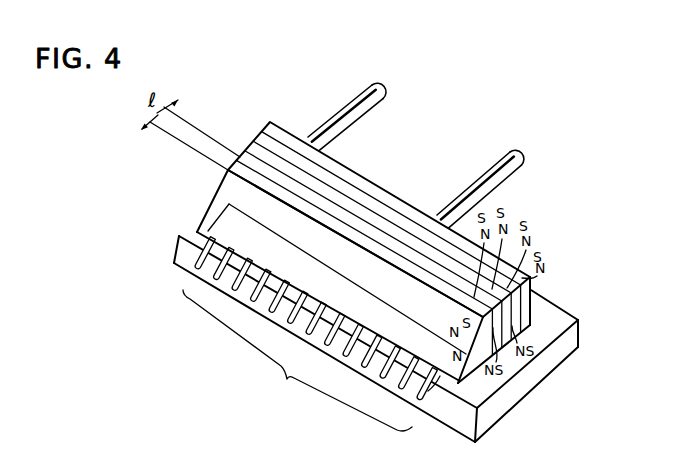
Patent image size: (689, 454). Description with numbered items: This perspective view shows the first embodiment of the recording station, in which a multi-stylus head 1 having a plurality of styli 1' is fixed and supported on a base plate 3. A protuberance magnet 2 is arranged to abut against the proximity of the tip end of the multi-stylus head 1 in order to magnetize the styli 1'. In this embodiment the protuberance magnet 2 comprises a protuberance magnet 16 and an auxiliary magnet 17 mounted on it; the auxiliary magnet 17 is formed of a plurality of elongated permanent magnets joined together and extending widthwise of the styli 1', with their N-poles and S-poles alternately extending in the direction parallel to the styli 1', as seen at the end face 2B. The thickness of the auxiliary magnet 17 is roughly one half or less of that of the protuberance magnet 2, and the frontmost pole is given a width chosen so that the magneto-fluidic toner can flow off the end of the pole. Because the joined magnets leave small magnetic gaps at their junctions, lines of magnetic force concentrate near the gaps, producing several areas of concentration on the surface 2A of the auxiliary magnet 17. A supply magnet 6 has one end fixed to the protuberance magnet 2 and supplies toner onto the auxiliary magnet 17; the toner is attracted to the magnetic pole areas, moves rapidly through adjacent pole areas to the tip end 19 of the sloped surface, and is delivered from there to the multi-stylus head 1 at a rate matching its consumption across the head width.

The multi-stylus head 1 is at (297, 360).
The styli 1' is at (432, 399).
The protuberance magnet 2 is at (128, 182).
The surface of the auxiliary magnet 2A is at (358, 203).
The end face of the protuberance magnet assembly 2B is at (533, 284).
The base plate 3 is at (539, 372).
The supply magnet 6 is at (344, 110).
The protuberance magnet 16 is at (203, 215).
The auxiliary magnet 17 is at (226, 178).
The tip end of the sloped surface 19 is at (197, 224).